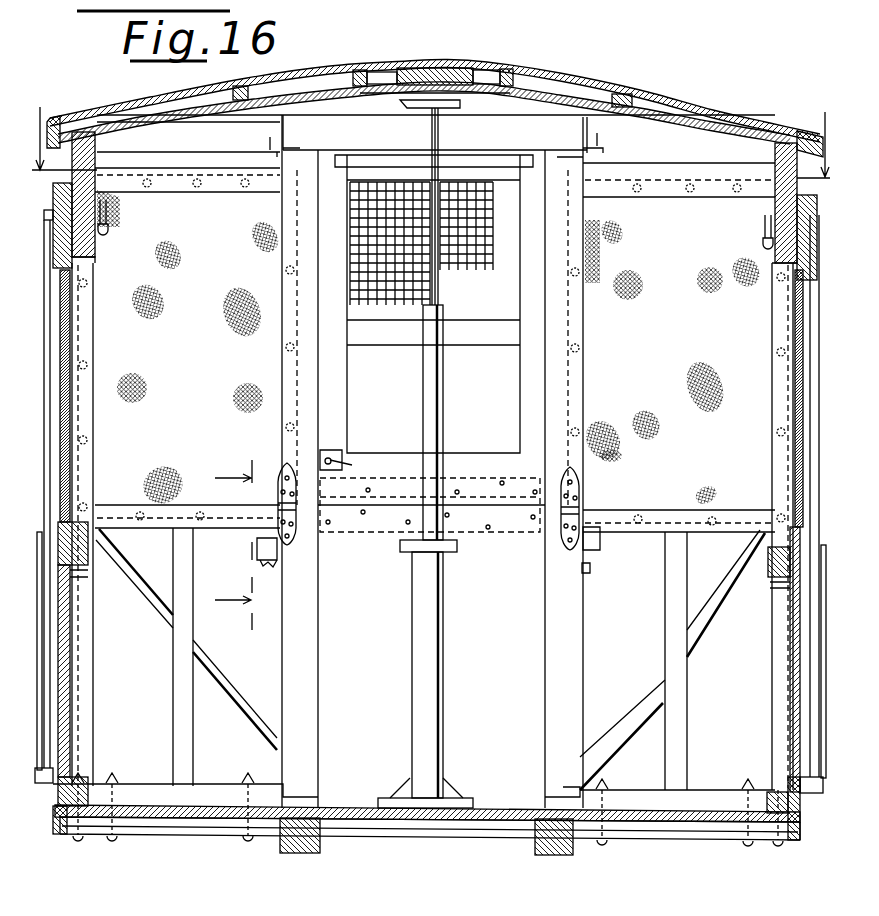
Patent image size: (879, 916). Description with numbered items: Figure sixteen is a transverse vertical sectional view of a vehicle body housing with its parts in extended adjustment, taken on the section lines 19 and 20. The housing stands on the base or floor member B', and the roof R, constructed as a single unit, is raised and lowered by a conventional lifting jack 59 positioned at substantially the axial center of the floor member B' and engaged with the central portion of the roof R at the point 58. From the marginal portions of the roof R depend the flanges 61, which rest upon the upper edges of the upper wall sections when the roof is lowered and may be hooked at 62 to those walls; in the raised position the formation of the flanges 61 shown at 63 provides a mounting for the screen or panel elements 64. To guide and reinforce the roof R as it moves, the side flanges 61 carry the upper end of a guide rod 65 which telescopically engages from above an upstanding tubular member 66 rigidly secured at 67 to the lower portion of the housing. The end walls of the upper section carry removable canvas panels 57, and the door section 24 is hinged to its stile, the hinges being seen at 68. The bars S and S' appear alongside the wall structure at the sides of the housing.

The roof R is at (660, 92).
The engagement point of jack with roof 58 is at (470, 65).
The section line 20 is at (421, 132).
The section line 19 is at (237, 546).
The flanges 61 is at (83, 133).
The removable canvas panels 57 is at (680, 155).
The hook 62 is at (112, 218).
The flange formation 63 is at (46, 218).
The screen or panel elements 64 is at (75, 353).
The guide rod 65 is at (48, 426).
The door section 24 is at (580, 381).
The hinged connection 68 is at (300, 533).
The lifting jack 59 is at (443, 707).
The upstanding tubular member 66 is at (48, 694).
The securing point of tubular member 67 is at (53, 787).
The sliding bar S is at (431, 662).
The sliding bar S' is at (427, 496).
The base or floor member B' is at (426, 851).